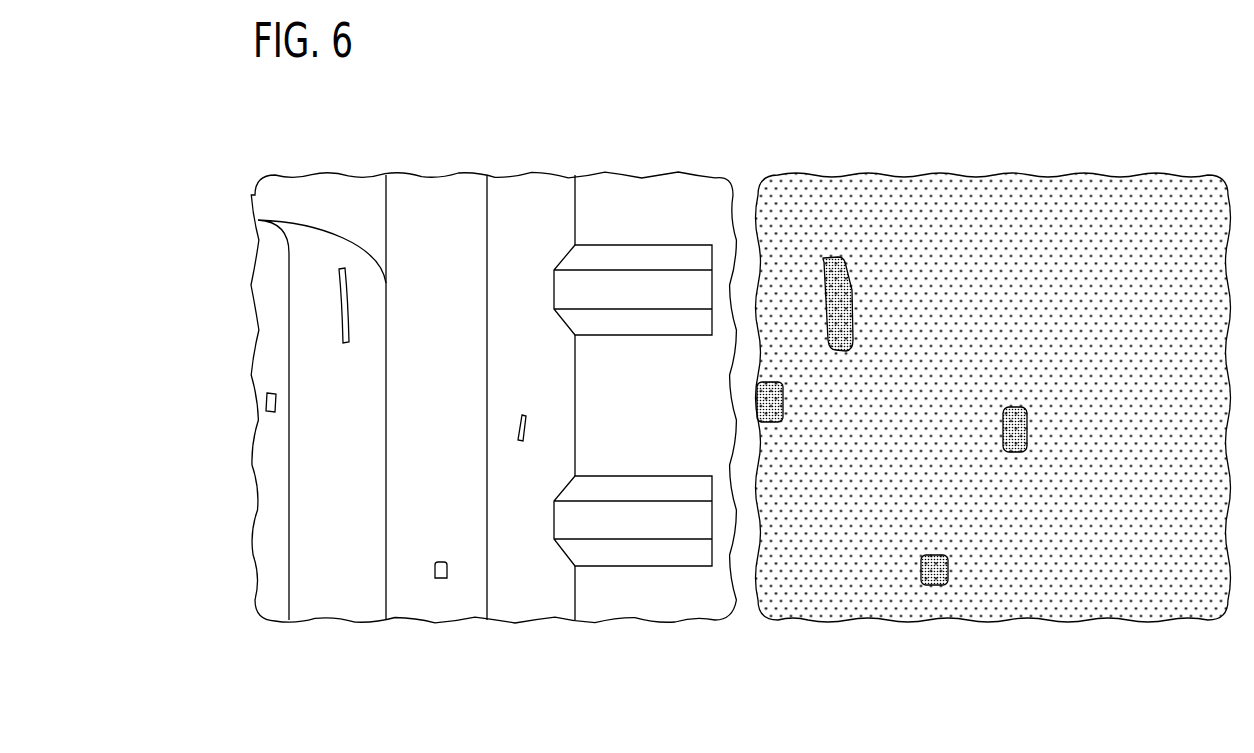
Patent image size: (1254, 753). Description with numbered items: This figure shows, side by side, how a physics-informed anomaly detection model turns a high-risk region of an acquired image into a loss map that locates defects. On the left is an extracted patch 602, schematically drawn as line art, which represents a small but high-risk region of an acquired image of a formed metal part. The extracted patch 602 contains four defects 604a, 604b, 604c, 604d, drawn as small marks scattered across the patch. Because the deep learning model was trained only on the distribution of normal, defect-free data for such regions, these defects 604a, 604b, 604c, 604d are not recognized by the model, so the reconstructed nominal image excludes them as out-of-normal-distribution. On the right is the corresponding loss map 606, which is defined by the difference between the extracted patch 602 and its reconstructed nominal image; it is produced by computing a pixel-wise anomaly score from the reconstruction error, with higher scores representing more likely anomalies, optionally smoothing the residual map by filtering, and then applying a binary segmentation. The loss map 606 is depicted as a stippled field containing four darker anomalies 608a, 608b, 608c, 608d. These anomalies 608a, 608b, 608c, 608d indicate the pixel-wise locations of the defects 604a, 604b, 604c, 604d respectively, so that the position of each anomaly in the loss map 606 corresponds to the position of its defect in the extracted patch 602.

The extracted patch 602 is at (533, 120).
The defect 604a is at (268, 403).
The defect 604b is at (340, 305).
The defect 604c is at (440, 578).
The defect 604d is at (524, 414).
The loss map 606 is at (993, 120).
The anomaly 608a is at (783, 402).
The anomaly 608b is at (853, 305).
The anomaly 608c is at (948, 560).
The anomaly 608d is at (1027, 432).